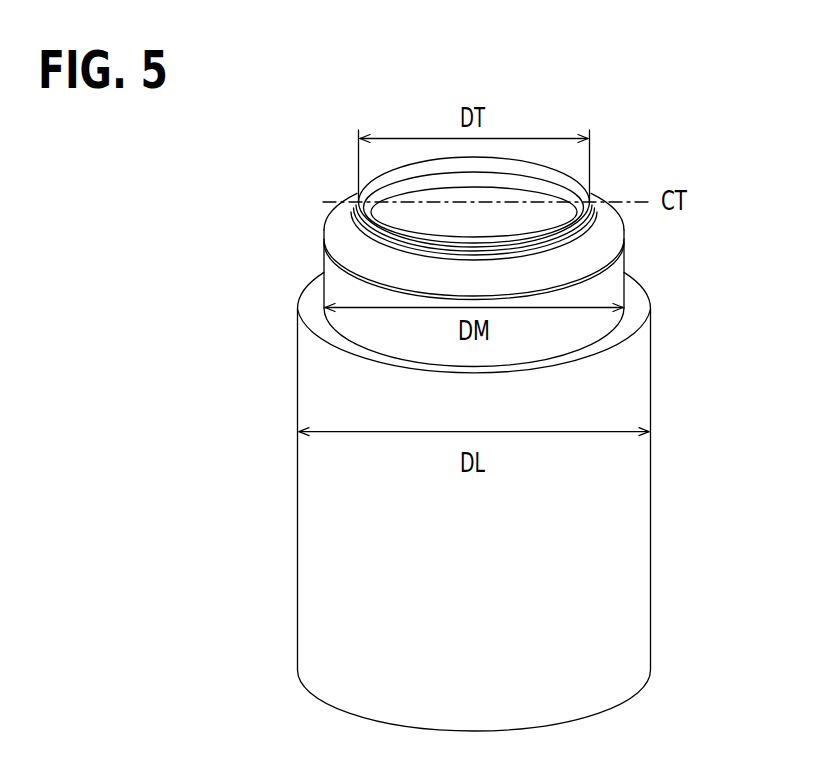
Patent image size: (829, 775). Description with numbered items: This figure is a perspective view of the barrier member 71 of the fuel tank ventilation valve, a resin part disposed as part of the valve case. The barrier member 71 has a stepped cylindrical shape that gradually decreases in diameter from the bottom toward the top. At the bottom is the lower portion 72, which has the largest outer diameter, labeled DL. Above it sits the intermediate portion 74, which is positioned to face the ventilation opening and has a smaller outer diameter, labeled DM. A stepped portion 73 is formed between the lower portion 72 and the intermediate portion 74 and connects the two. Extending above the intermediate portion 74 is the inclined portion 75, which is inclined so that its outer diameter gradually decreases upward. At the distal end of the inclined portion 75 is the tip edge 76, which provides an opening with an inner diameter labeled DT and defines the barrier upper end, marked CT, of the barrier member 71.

The barrier member 71 is at (212, 211).
The lower portion 72 is at (315, 402).
The stepped portion 73 is at (312, 310).
The intermediate portion 74 is at (337, 285).
The inclined portion 75 is at (342, 238).
The tip edge 76 is at (352, 201).